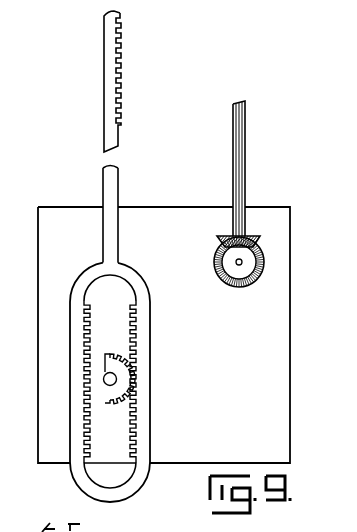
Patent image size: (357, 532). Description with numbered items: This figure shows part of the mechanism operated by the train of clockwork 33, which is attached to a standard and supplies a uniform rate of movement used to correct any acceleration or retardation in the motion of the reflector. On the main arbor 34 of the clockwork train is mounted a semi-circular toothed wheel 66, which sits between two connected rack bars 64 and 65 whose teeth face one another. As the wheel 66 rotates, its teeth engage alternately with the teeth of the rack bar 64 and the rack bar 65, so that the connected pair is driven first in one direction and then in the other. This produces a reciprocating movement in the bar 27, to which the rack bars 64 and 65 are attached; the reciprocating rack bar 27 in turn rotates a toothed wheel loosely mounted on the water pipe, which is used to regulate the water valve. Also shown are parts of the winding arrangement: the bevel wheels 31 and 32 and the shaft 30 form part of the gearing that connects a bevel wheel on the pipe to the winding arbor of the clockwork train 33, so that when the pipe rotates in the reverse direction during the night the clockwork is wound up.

The rack bar 27 is at (110, 101).
The shaft 30 is at (261, 168).
The bevel wheel 31 is at (247, 237).
The bevel wheel 32 is at (242, 277).
The train of clockwork 33 is at (164, 335).
The main arbor 34 is at (107, 386).
The rack bar 64 is at (131, 317).
The rack bar 65 is at (138, 345).
The semi-circular toothed wheel 66 is at (118, 381).